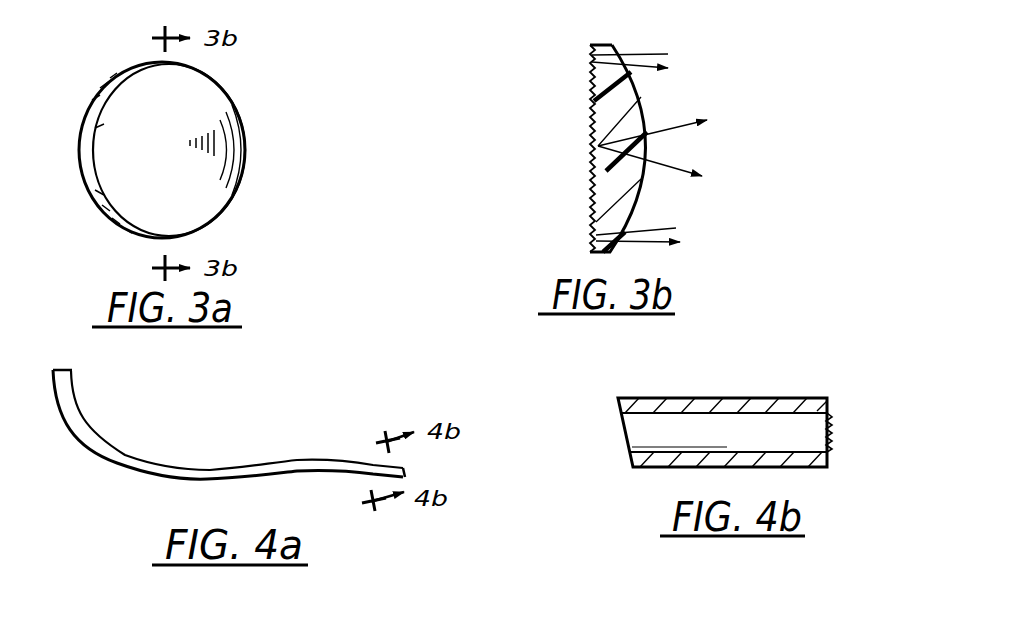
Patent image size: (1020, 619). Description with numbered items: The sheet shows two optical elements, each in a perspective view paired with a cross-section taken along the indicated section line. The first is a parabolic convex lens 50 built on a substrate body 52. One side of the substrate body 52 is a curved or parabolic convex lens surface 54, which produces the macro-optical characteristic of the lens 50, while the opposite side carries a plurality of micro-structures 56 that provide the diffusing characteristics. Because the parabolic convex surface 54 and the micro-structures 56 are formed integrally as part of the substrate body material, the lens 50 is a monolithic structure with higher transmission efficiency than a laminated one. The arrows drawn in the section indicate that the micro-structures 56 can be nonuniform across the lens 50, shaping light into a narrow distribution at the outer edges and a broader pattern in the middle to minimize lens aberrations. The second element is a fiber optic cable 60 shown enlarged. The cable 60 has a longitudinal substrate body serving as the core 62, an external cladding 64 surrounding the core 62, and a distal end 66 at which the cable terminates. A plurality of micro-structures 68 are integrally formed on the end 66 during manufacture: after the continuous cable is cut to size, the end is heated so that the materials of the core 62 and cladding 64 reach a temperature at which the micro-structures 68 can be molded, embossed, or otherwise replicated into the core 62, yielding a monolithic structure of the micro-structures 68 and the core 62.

In FIG. 3A, the parabolic convex lens 50 is at (256, 108).
In FIG. 3B, the parabolic convex lens 50 is at (586, 52).
In FIG. 3B, the substrate body 52 is at (597, 92).
In FIG. 3A, the parabolic convex lens surface 54 is at (208, 147).
In FIG. 3B, the parabolic convex lens surface 54 is at (645, 190).
In FIG. 3B, the micro-structures 56 is at (596, 176).
In FIG. 4A, the fiber optic cable 60 is at (190, 403).
In FIG. 4B, the fiber optic cable 60 is at (781, 387).
In FIG. 4A, the core 62 is at (298, 463).
In FIG. 4B, the core 62 is at (713, 428).
In FIG. 4B, the cladding 64 is at (697, 403).
In FIG. 4A, the distal end 66 is at (410, 472).
In FIG. 4B, the distal end 66 is at (828, 403).
In FIG. 4B, the micro-structures 68 is at (831, 436).